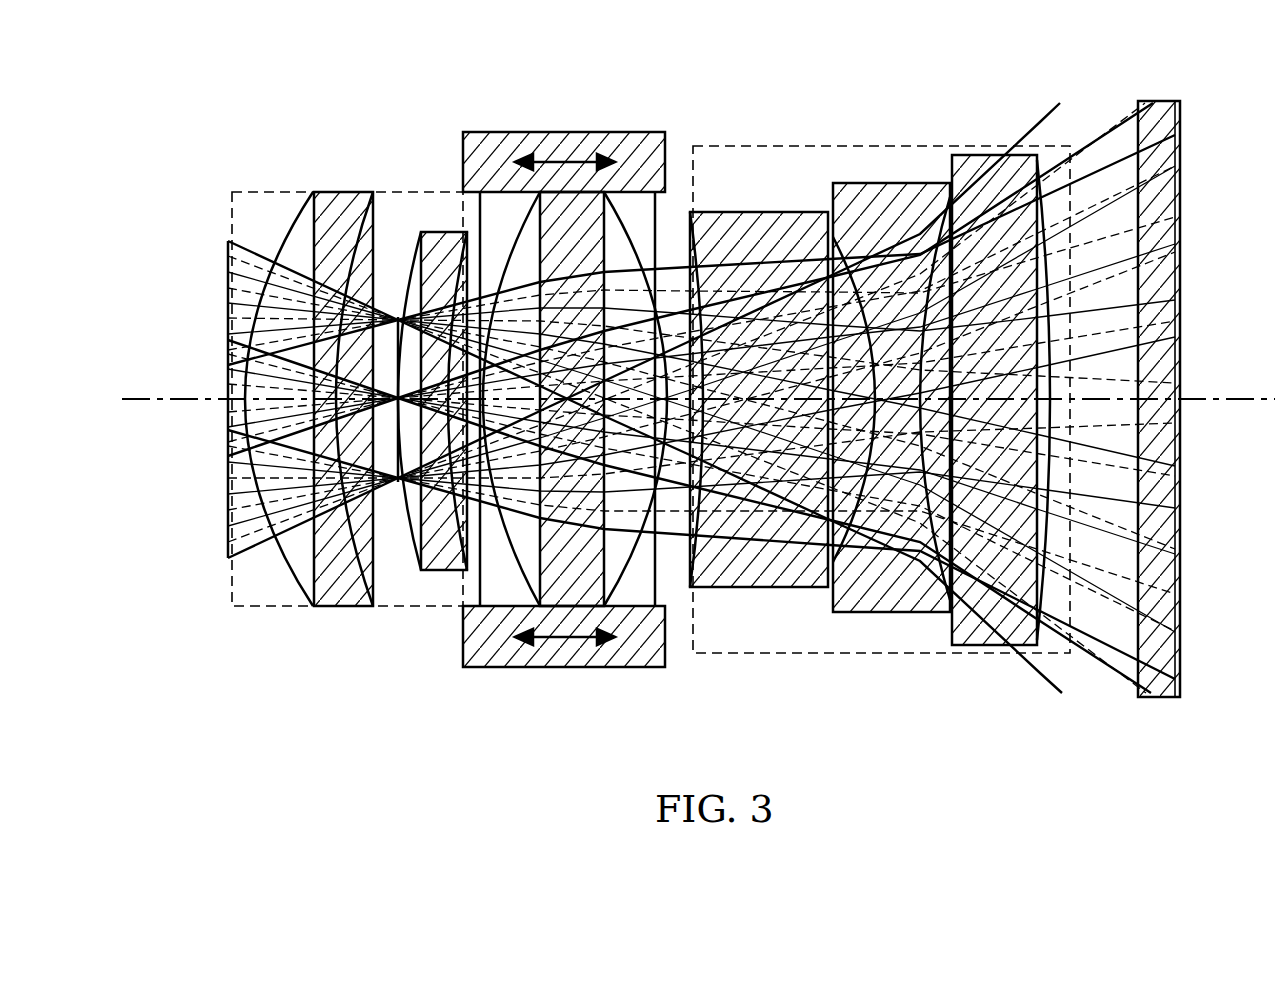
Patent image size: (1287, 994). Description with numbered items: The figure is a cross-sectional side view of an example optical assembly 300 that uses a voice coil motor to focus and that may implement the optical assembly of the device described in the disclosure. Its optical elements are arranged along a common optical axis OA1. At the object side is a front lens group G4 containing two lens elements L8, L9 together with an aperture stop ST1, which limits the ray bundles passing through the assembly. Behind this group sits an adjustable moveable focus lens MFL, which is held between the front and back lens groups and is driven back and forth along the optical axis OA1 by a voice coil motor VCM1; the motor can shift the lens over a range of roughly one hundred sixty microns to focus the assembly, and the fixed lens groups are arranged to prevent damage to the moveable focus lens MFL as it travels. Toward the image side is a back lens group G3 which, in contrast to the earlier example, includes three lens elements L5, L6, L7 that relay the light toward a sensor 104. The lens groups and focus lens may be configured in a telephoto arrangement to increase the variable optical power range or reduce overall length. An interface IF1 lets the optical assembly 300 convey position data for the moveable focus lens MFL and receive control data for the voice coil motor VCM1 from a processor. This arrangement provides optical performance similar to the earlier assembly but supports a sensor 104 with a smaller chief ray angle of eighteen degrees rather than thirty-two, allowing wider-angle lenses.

The optical assembly 300 is at (128, 92).
The optical axis OA1 is at (158, 398).
The front lens group G4 is at (346, 192).
The lens element L8 is at (303, 562).
The lens element L9 is at (430, 545).
The aperture stop ST1 is at (396, 482).
The voice coil motor VCM1 is at (564, 132).
The moveable focus lens MFL is at (558, 585).
The interface IF1 is at (708, 714).
The back lens group G3 is at (919, 146).
The lens element L5 is at (753, 572).
The lens element L6 is at (895, 600).
The lens element L7 is at (985, 607).
The sensor 104 is at (1181, 134).